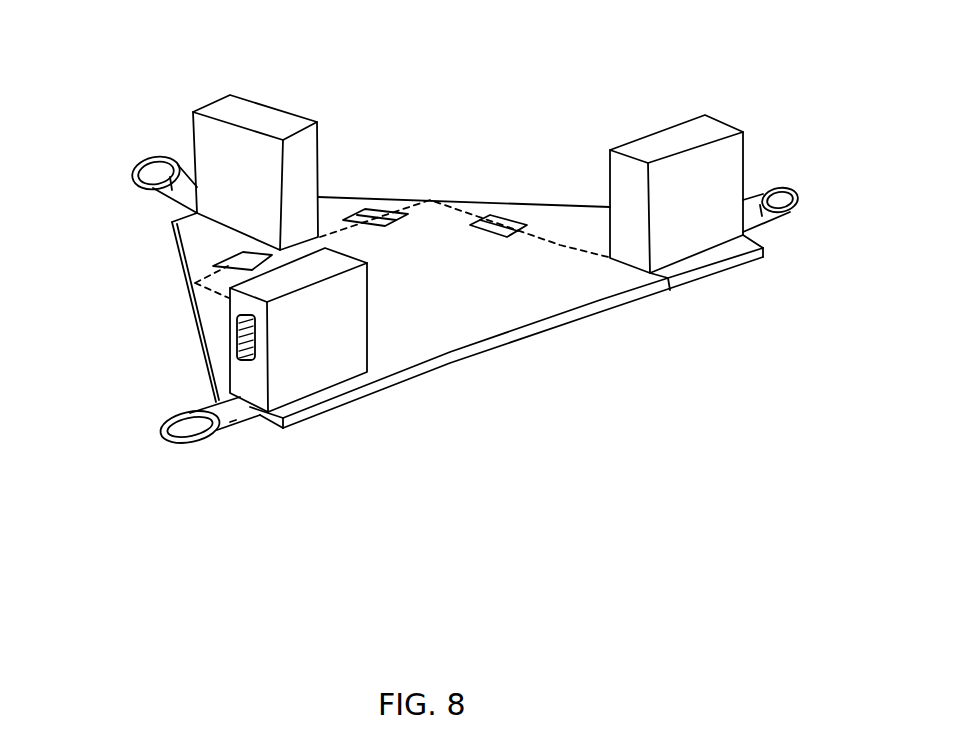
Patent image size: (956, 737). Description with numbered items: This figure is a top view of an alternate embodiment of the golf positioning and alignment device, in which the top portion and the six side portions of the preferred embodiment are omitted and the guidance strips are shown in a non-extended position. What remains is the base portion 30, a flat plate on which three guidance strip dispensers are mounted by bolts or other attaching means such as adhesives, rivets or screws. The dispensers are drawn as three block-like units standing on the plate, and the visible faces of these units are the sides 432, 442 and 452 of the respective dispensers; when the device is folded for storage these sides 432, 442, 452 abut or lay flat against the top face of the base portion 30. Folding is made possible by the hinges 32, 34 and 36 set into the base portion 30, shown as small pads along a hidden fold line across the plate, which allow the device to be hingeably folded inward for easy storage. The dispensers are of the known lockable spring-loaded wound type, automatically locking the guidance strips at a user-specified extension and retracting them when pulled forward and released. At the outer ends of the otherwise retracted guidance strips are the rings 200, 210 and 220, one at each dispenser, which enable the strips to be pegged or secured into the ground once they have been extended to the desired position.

The base portion 30 is at (505, 317).
The hinge 32 is at (502, 220).
The hinge 34 is at (380, 216).
The hinge 36 is at (232, 261).
The ring 200 is at (192, 446).
The ring 210 is at (799, 202).
The ring 220 is at (134, 164).
The side of guidance strip dispenser 432 is at (372, 291).
The side of guidance strip dispenser 442 is at (633, 228).
The side of guidance strip dispenser 452 is at (297, 173).